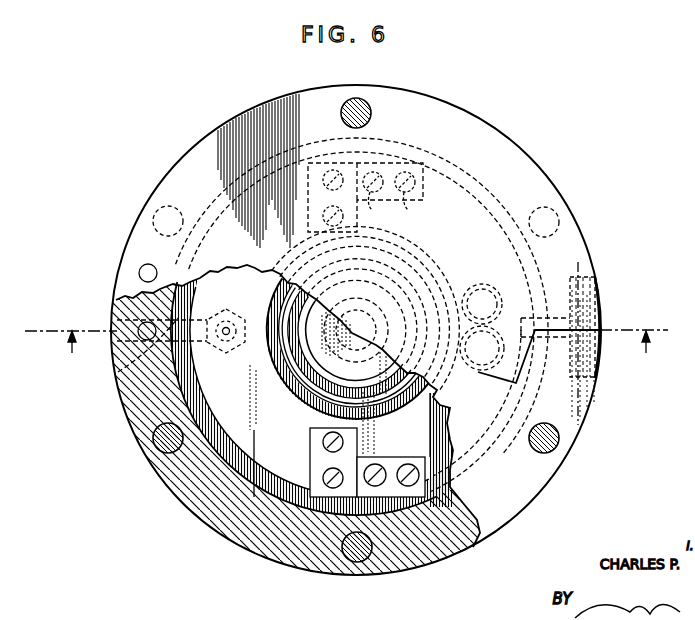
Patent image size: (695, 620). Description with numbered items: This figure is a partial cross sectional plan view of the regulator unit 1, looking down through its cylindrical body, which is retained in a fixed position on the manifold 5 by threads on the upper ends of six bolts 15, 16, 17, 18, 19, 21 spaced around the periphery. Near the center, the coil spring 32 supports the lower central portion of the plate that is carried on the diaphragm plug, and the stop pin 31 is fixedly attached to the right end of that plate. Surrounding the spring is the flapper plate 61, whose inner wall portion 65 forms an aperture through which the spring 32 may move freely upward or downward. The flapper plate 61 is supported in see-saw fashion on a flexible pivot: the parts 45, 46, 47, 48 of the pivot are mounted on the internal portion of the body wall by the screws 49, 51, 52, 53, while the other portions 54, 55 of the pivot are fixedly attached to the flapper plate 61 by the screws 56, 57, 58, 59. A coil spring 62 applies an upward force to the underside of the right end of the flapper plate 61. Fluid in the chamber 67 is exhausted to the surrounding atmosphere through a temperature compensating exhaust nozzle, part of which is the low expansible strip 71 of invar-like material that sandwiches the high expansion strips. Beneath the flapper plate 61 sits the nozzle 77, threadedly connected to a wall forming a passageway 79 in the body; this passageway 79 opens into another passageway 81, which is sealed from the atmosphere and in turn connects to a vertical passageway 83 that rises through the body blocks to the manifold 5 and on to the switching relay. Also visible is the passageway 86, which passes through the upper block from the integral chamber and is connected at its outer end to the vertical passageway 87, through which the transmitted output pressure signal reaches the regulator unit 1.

The regulator unit 1 is at (534, 132).
The manifold 5 is at (346, 353).
The bolt 15 is at (355, 100).
The bolt 16 is at (547, 219).
The bolt 17 is at (550, 447).
The bolt 18 is at (357, 560).
The bolt 19 is at (165, 447).
The bolt 21 is at (165, 219).
The stop pin 31 is at (482, 300).
The coil spring 32 is at (287, 300).
The flexible pivot part 45 is at (369, 172).
The flexible pivot part 46 is at (399, 172).
The flexible pivot part 47 is at (365, 465).
The flexible pivot part 48 is at (400, 492).
The screw 49 is at (377, 208).
The screw 51 is at (412, 208).
The screw 52 is at (410, 465).
The screw 53 is at (393, 458).
The flexible pivot portion 54 is at (315, 163).
The flexible pivot portion 55 is at (310, 447).
The screw 56 is at (323, 215).
The screw 57 is at (323, 182).
The screw 58 is at (323, 474).
The screw 59 is at (323, 437).
The flapper plate 61 is at (253, 440).
The coil spring 62 is at (440, 395).
The inner wall portion 65 is at (275, 378).
The chamber 67 is at (190, 393).
The low expansible strip 71 is at (600, 288).
The nozzle 77 is at (214, 352).
The passageway 79 is at (238, 348).
The passageway 81 is at (124, 366).
The vertical passageway 83 is at (145, 335).
The passageway 86 is at (205, 272).
The vertical passageway 87 is at (146, 272).